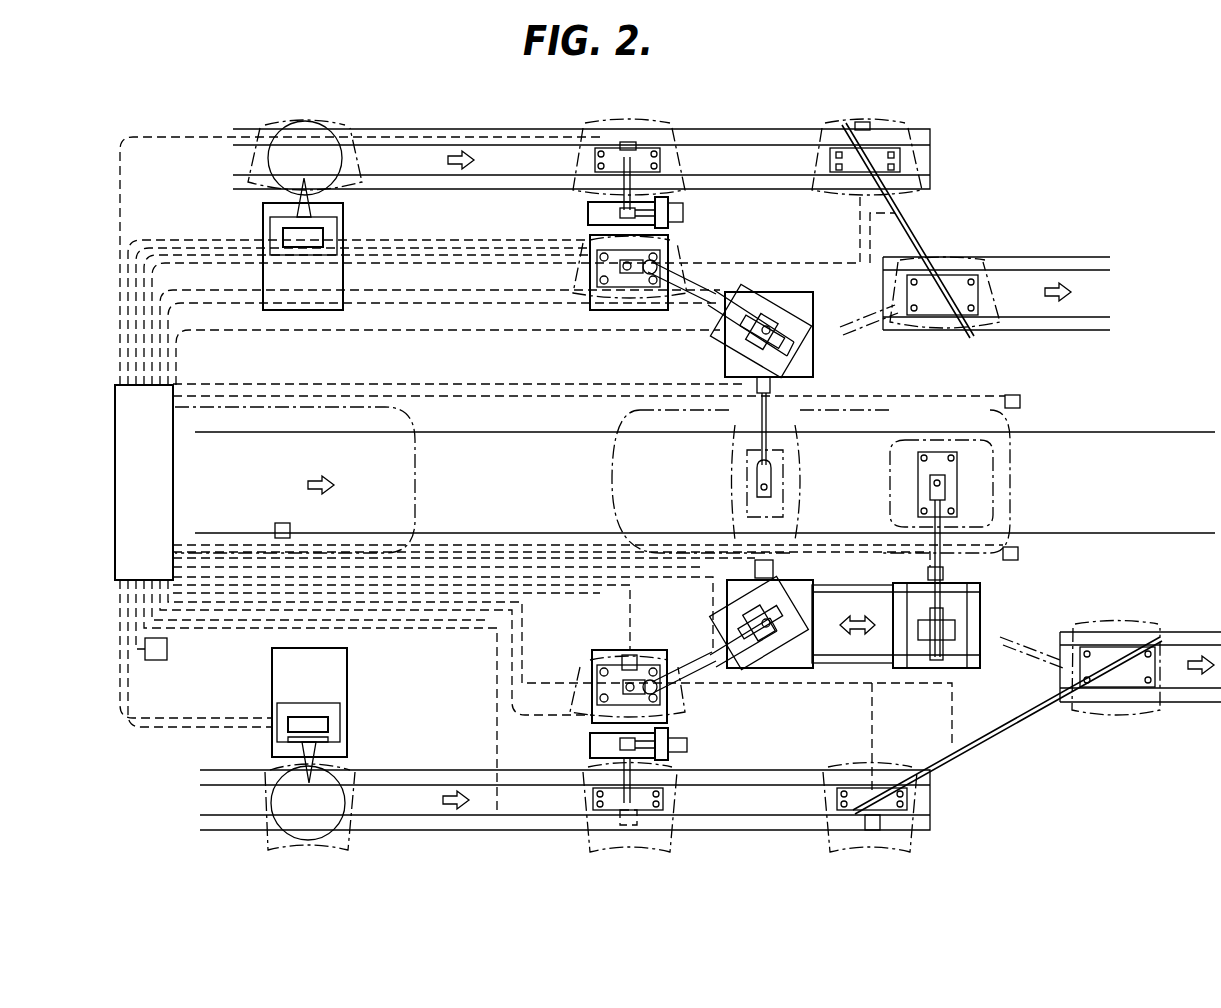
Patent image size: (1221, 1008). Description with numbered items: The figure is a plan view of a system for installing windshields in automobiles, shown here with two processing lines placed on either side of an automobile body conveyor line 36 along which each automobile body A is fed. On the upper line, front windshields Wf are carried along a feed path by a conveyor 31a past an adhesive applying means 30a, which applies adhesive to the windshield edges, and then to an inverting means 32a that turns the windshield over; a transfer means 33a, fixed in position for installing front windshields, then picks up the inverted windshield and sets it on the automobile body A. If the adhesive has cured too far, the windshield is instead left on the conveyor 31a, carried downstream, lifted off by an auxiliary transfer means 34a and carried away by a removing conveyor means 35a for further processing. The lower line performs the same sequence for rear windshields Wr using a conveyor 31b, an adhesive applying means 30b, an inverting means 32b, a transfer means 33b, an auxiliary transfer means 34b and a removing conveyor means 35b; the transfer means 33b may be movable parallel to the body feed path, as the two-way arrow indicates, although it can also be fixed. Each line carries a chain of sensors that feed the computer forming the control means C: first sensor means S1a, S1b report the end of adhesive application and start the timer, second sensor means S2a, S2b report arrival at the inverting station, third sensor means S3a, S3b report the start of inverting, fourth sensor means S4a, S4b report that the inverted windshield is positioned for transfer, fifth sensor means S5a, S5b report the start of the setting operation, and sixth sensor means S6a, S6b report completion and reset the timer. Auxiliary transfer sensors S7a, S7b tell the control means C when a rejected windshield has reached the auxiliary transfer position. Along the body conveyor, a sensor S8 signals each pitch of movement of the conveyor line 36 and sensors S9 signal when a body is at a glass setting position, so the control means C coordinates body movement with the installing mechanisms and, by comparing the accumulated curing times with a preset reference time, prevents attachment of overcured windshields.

The control means C is at (120, 466).
The automobile body conveyor line 36 is at (495, 445).
The automobile body A is at (412, 500).
The sensor S8 is at (280, 523).
The sensors S9 is at (1020, 401).
The conveyor 31a is at (446, 198).
The conveyor 31b is at (458, 778).
The front windshield Wf is at (346, 185).
The rear windshield Wr is at (268, 773).
The adhesive applying means 30a is at (343, 240).
The adhesive applying means 30b is at (347, 740).
The first sensor means S1a is at (283, 235).
The first sensor means S1b is at (328, 724).
The second sensor means S2a is at (627, 130).
The second sensor means S2b is at (630, 830).
The inverting means 32a is at (588, 212).
The inverting means 32b is at (590, 745).
The third sensor means S3a is at (683, 212).
The third sensor means S3b is at (687, 745).
The fourth sensor means S4a is at (626, 295).
The fourth sensor means S4b is at (643, 655).
The fifth sensor means S5a is at (721, 290).
The fifth sensor means S5b is at (710, 645).
The transfer means 33a is at (735, 345).
The transfer means 33b is at (750, 662).
The sixth sensor means S6a is at (772, 385).
The sixth sensor means S6b is at (945, 575).
The auxiliary transfer sensor S7a is at (866, 125).
The auxiliary transfer sensor S7b is at (905, 840).
The auxiliary transfer means 34a is at (912, 234).
The auxiliary transfer means 34b is at (1000, 738).
The removing conveyor means 35a is at (1057, 327).
The removing conveyor means 35b is at (1178, 702).